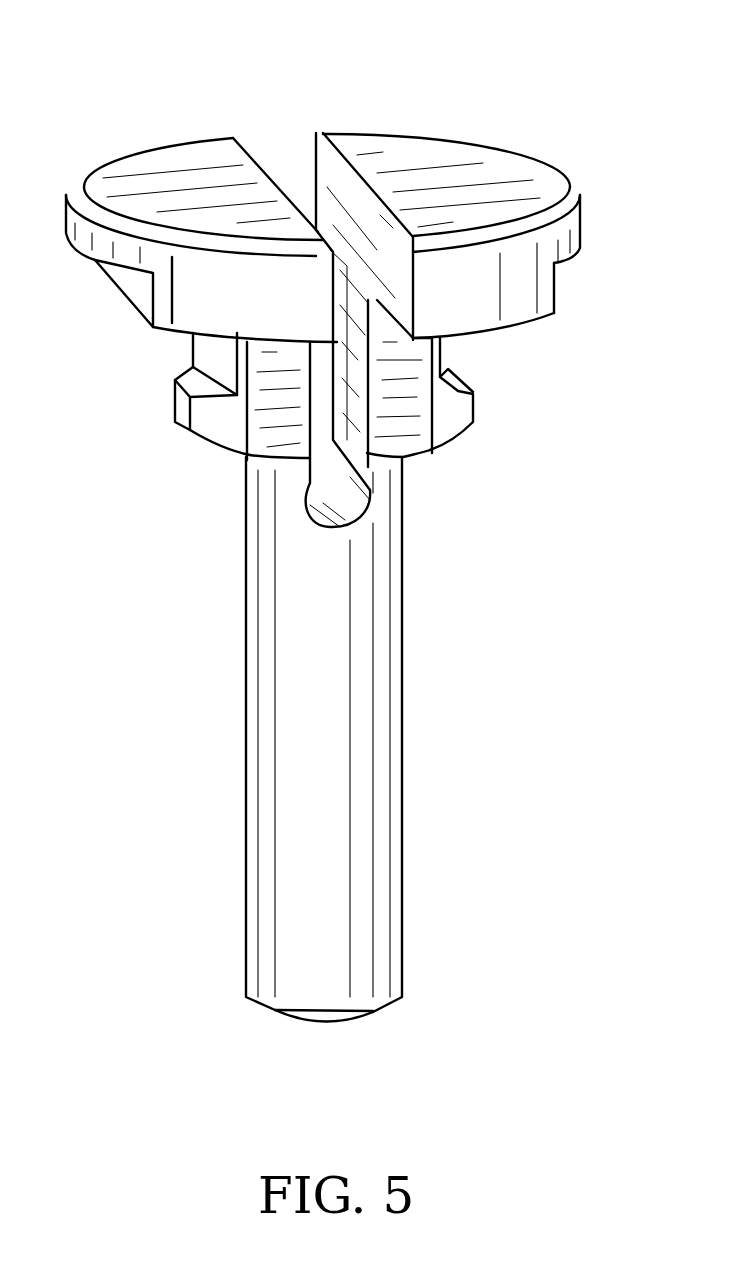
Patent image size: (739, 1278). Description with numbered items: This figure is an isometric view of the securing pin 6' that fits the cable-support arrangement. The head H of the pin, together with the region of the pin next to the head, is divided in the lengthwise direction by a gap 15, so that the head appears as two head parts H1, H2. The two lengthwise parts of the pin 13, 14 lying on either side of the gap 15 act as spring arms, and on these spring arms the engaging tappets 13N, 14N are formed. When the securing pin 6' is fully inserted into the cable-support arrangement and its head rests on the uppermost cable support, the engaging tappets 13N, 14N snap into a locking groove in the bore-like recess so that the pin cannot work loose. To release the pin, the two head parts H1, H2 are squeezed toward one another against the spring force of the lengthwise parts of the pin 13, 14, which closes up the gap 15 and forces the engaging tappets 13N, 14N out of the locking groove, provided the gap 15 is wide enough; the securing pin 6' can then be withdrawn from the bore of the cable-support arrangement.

The head H is at (220, 147).
The head part H1 is at (152, 164).
The head part H2 is at (465, 167).
The gap 15 is at (390, 270).
The engaging tappet 13N is at (197, 425).
The engaging tappet 14N is at (460, 420).
The lengthwise part of the pin 13 is at (280, 435).
The lengthwise part of the pin 14 is at (400, 435).
The securing pin 6' is at (363, 739).